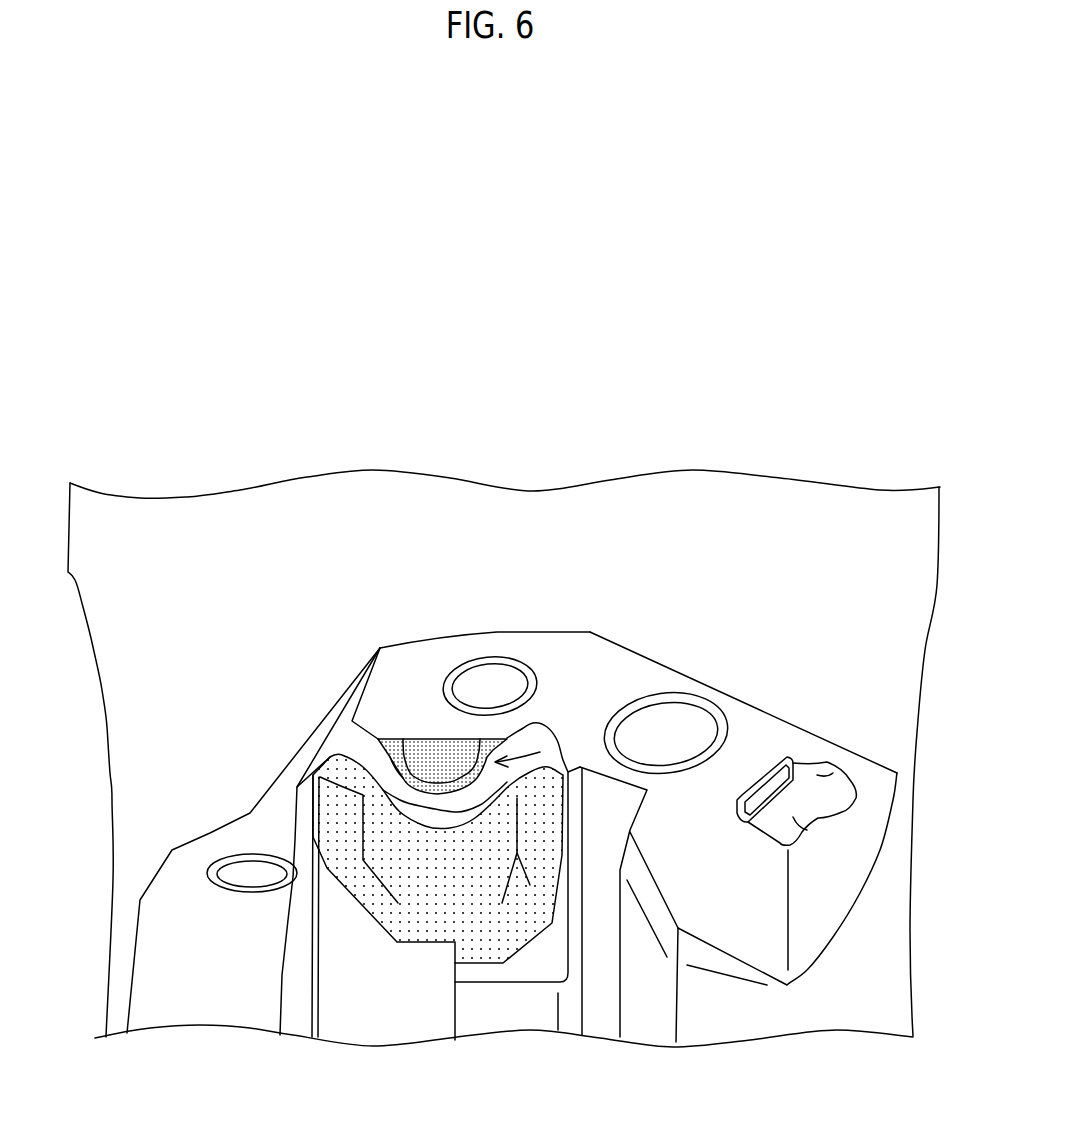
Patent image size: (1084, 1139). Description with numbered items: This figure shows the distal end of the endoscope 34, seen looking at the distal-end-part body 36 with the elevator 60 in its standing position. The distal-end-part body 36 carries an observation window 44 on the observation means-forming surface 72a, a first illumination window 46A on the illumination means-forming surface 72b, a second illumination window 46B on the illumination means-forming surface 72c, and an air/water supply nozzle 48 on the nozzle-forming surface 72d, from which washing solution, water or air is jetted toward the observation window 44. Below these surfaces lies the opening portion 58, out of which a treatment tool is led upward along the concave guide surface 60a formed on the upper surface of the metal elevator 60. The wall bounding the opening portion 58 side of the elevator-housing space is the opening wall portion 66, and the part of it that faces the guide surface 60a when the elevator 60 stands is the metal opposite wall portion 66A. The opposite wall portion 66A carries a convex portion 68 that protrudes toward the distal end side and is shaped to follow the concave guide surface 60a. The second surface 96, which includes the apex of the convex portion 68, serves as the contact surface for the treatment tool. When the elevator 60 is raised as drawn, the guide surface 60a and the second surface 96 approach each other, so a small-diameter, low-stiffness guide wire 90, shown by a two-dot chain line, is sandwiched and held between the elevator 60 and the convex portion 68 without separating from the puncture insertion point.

The center console assembly 34 is at (286, 387).
The distal-end-part body 36 is at (215, 537).
The convex portion 68 is at (440, 750).
The opening wall portion 66 is at (409, 733).
The opposite wall portion 66A is at (441, 761).
The first illumination window 46A is at (487, 682).
The illumination means-forming surface 72b is at (545, 655).
The second surface 96 is at (570, 747).
The observation means-forming surface 72a is at (630, 678).
The observation window 44 is at (670, 733).
The nozzle-forming surface 72d is at (813, 753).
The guide wire 90 is at (375, 757).
The illumination means-forming surface 72c is at (218, 840).
The second illumination window 46B is at (245, 878).
The opening portion 58 is at (282, 975).
The guide surface 60a is at (465, 797).
The elevator 60 is at (480, 932).
The air/water supply nozzle 48 is at (795, 842).